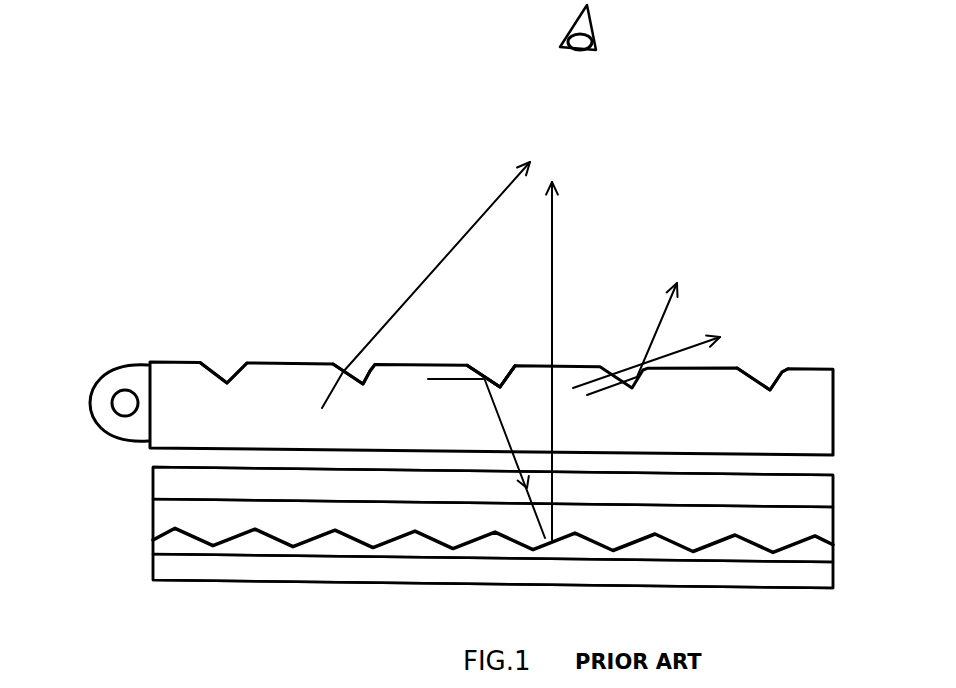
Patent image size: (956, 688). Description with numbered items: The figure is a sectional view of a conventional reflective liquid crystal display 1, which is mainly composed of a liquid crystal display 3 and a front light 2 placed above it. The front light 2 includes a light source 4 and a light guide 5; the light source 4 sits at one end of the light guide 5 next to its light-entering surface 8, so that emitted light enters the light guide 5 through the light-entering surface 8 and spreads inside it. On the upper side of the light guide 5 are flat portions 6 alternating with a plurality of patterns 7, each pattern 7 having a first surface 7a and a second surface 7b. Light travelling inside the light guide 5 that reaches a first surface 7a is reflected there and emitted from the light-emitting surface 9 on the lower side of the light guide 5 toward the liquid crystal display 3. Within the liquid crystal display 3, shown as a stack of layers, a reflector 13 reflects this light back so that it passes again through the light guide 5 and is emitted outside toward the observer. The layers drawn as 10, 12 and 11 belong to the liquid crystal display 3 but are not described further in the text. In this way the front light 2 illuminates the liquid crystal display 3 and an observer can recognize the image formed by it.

The reflective liquid crystal display 1 is at (347, 648).
The front light 2 is at (515, 408).
The liquid crystal display 3 is at (845, 477).
The light source 4 is at (107, 368).
The light guide 5 is at (788, 402).
The flat portions 6 is at (283, 362).
The patterns 7 is at (443, 296).
The first surface 7a is at (473, 366).
The second surface 7b is at (503, 365).
The light-entering surface 8 is at (163, 363).
The light-emitting surface 9 is at (307, 448).
The upper sheet layer 10 is at (153, 483).
The lower sheet layer 11 is at (153, 566).
The intermediate layer 12 is at (153, 517).
The reflector 13 is at (163, 543).